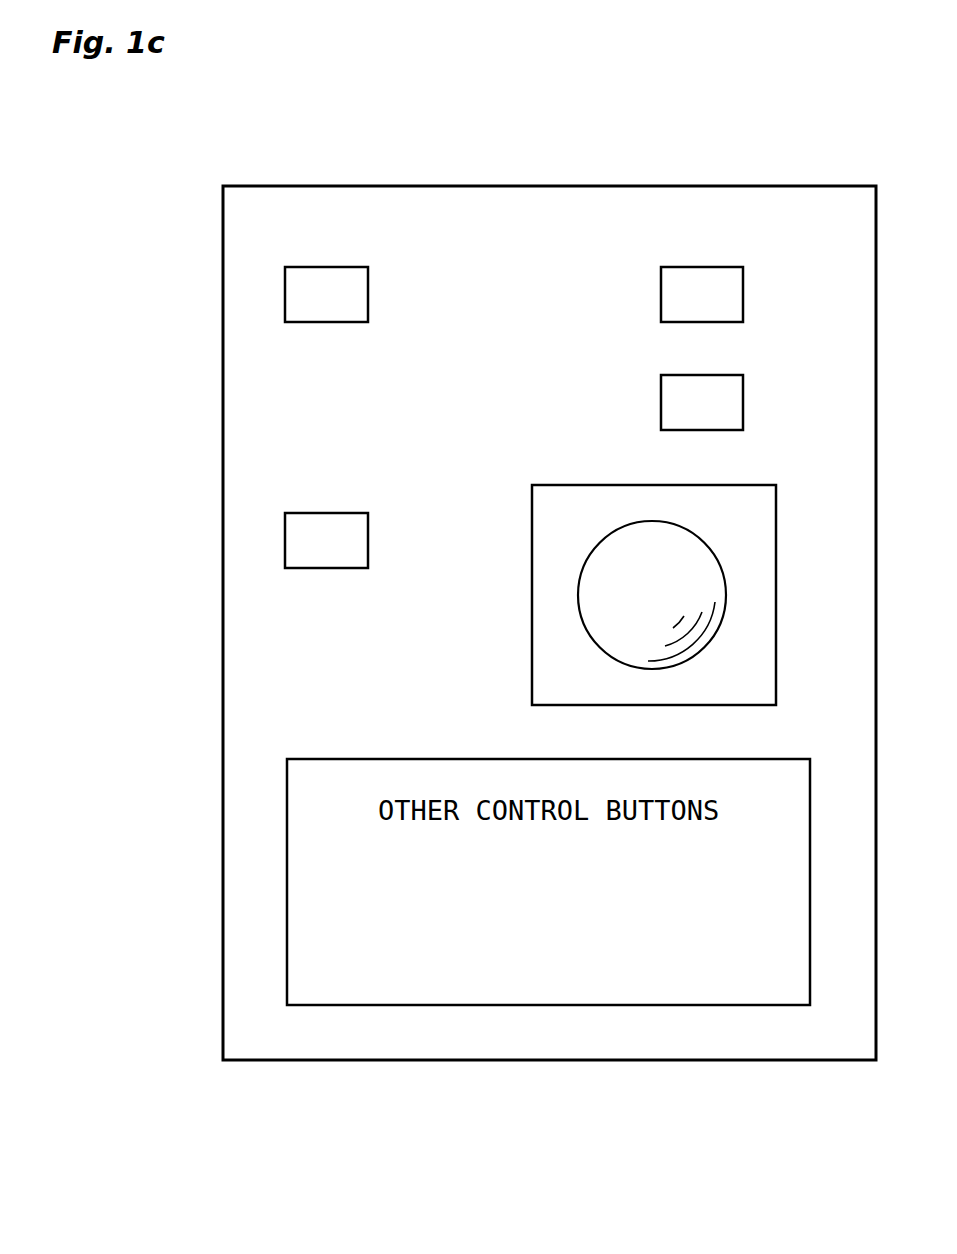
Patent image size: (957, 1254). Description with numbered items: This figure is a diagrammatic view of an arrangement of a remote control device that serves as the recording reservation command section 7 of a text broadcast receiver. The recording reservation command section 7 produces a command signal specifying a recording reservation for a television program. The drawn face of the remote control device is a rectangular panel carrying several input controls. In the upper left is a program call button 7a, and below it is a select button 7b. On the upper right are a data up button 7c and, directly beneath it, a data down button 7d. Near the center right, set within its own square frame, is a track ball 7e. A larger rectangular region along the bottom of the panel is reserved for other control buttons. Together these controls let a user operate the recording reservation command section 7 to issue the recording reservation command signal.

The recording reservation command section 7 is at (630, 183).
The program call button 7a is at (368, 298).
The select button 7b is at (368, 546).
The data up button 7c is at (743, 297).
The data down button 7d is at (743, 406).
The track ball 7e is at (717, 557).